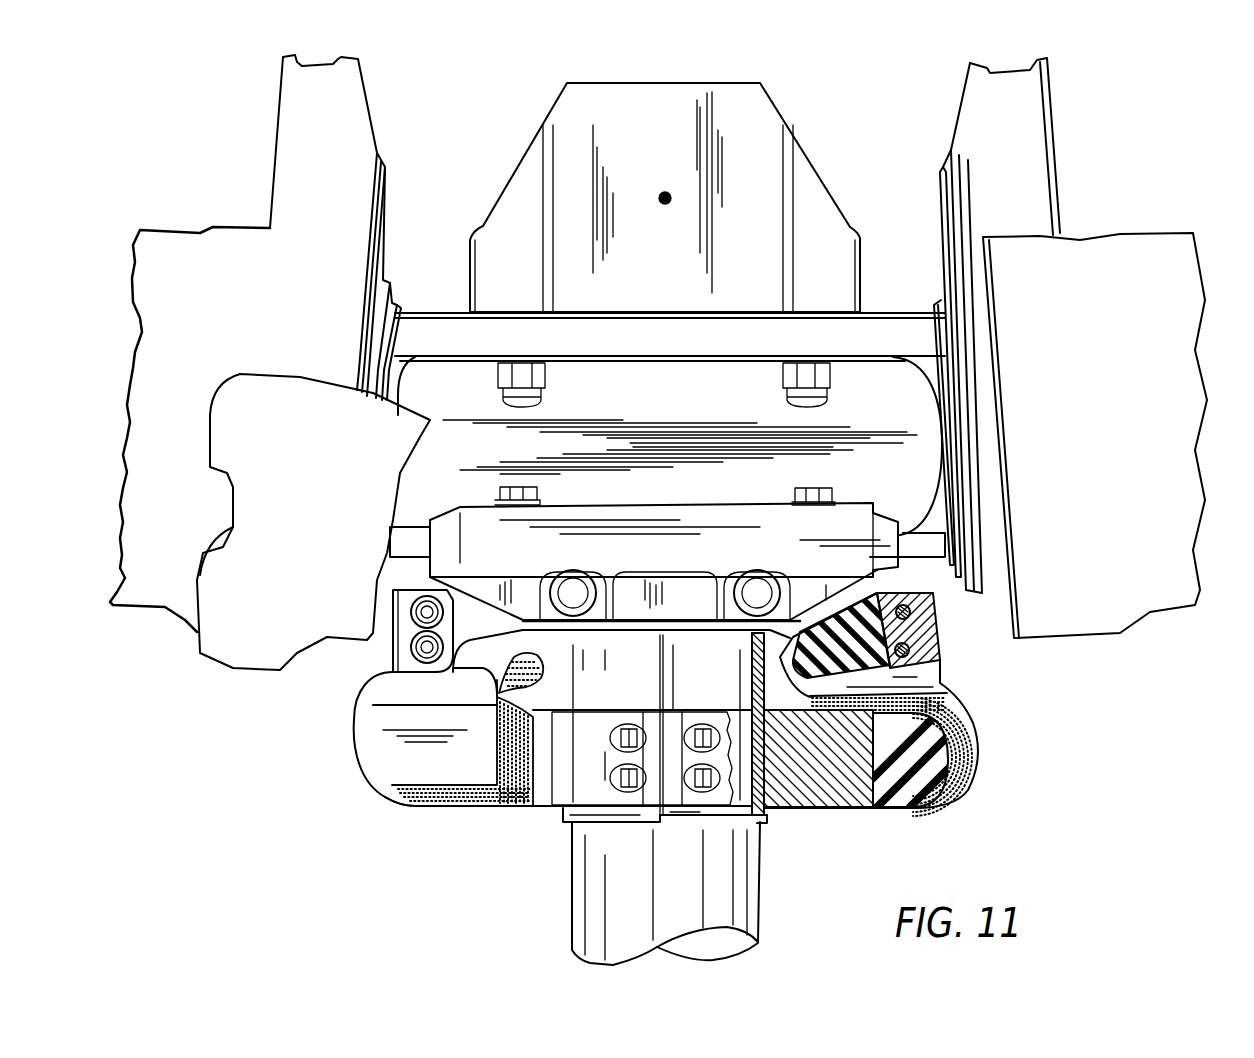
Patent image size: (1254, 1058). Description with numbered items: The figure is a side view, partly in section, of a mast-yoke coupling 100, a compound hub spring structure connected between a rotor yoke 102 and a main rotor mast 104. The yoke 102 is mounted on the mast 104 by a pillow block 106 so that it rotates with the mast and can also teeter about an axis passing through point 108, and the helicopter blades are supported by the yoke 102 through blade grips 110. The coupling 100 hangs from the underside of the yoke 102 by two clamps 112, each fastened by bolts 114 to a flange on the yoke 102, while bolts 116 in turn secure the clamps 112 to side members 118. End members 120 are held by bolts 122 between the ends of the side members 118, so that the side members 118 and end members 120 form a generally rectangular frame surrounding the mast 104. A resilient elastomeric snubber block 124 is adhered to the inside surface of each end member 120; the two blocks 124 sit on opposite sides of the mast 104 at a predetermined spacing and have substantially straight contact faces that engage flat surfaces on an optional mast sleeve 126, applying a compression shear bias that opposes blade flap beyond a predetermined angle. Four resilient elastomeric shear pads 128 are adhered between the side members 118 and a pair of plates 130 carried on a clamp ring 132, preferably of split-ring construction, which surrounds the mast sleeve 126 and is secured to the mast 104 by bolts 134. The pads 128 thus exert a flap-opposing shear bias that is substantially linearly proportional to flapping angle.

The mast-yoke coupling 100 is at (1075, 733).
The rotor yoke 102 is at (880, 332).
The main rotor mast 104 is at (612, 892).
The pillow block 106 is at (828, 195).
The point 108 is at (664, 195).
The blade grips 110 is at (273, 270).
The clamps 112 is at (702, 551).
The bolts 114 is at (517, 486).
The bolts 116 is at (572, 594).
The side members 118 is at (380, 753).
The end members 120 is at (405, 597).
The bolts 122 is at (423, 645).
The resilient elastomeric snubber block 124 is at (525, 683).
The mast sleeve 126 is at (765, 815).
The resilient elastomeric shear pads 128 is at (448, 806).
The plates 130 is at (417, 800).
The clamp ring 132 is at (562, 793).
The bolts 134 is at (624, 772).